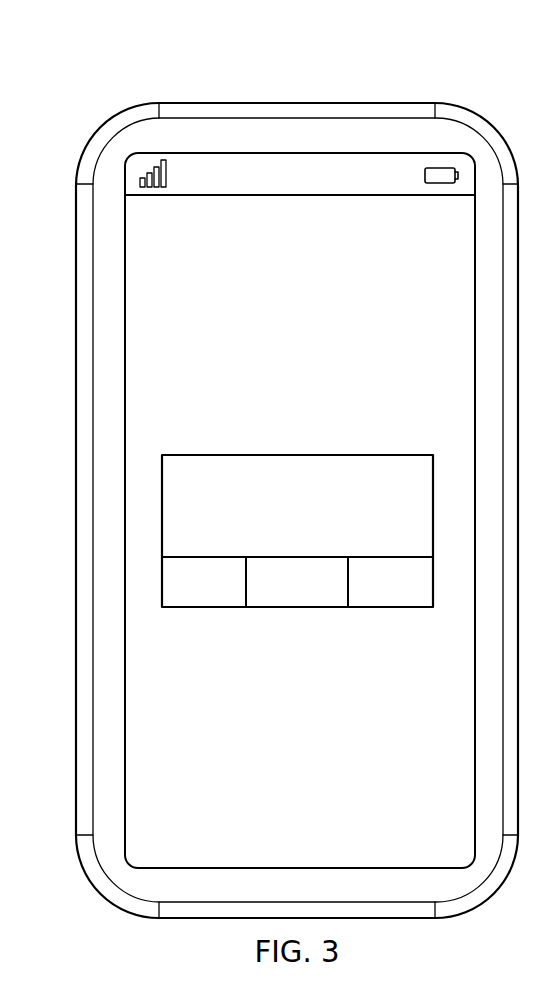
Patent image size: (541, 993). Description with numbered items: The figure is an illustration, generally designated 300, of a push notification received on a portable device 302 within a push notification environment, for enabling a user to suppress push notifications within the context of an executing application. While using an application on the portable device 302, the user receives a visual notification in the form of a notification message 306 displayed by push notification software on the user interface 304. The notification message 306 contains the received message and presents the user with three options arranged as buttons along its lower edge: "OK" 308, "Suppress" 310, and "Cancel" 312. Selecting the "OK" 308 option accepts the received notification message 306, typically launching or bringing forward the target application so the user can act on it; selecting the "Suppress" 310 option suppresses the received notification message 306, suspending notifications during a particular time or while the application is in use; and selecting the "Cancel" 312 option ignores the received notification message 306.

The illustration of a push notification 300 is at (408, 67).
The portable device 302 is at (76, 510).
The user interface 304 is at (280, 338).
The notification message 306 is at (281, 532).
The OK option 308 is at (203, 602).
The Suppress option 310 is at (297, 602).
The Cancel option 312 is at (390, 602).